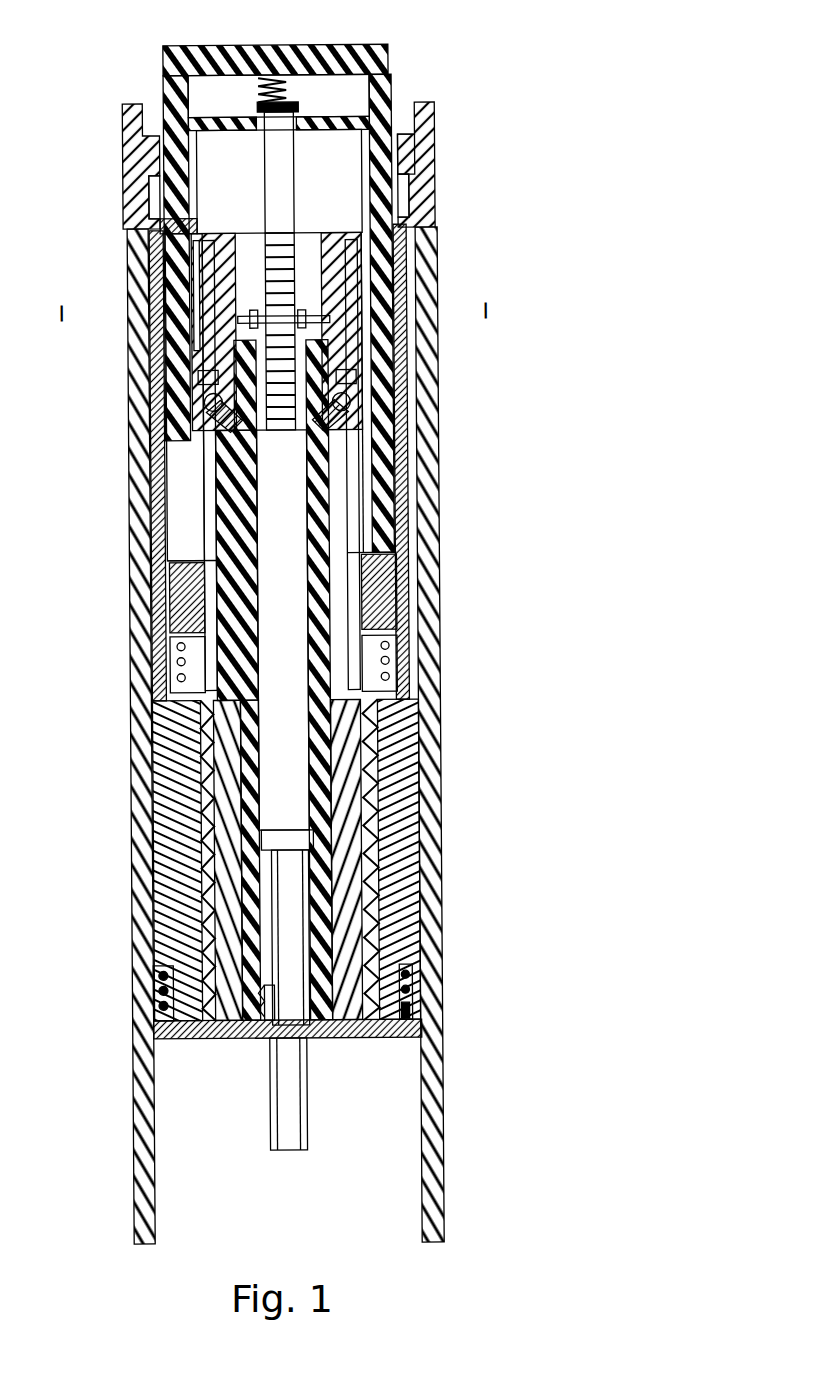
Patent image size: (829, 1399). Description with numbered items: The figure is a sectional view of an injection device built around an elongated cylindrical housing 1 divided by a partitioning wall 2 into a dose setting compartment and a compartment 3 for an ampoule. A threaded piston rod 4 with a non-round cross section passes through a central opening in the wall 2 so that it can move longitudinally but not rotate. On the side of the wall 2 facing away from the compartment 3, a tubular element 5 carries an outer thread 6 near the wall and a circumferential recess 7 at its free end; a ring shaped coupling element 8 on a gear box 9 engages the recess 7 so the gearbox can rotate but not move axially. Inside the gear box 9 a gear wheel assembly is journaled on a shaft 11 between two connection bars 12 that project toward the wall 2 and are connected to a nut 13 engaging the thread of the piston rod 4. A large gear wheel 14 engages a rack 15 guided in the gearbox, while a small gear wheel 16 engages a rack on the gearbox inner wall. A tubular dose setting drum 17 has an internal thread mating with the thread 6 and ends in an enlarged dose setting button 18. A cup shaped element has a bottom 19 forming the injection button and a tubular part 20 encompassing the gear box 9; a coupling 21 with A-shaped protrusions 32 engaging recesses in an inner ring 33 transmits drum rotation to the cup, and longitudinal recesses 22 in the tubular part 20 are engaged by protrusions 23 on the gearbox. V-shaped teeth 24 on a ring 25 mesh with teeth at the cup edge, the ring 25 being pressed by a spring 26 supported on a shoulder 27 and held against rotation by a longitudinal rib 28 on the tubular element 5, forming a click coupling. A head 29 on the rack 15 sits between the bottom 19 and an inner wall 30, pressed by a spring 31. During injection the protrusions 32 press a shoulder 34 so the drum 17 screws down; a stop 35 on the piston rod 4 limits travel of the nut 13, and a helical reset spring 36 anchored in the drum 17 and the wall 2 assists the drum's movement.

The housing 1 is at (137, 890).
The partitioning wall 2 is at (200, 1036).
The compartment 3 is at (190, 1160).
The piston rod 4 is at (283, 951).
The tubular element 5 is at (220, 494).
The outer thread 6 is at (202, 810).
The circumferential recess 7 is at (213, 398).
The coupling element 8 is at (236, 428).
The gear box 9 is at (208, 312).
The shaft 11 is at (324, 320).
The connection bars 12 is at (318, 480).
The nut 13 is at (260, 1000).
The gear wheel 14 is at (162, 245).
The rack 15 is at (200, 362).
The gear wheel 16 is at (266, 306).
The dose setting drum 17 is at (195, 553).
The dose setting button 18 is at (128, 127).
The bottom 19 is at (300, 57).
The tubular part 20 is at (178, 453).
The coupling 21 is at (403, 125).
The longitudinal recesses 22 is at (368, 360).
The protrusions 23 is at (402, 253).
The V-shaped teeth 24 is at (385, 560).
The ring 25 is at (172, 608).
The spring 26 is at (175, 660).
The shoulder 27 is at (386, 684).
The longitudinal rib 28 is at (207, 523).
The head 29 is at (303, 106).
The inner wall 30 is at (238, 120).
The spring 31 is at (266, 95).
The A-shaped protrusions 32 is at (408, 178).
The inner ring 33 is at (408, 148).
The shoulder 34 is at (150, 212).
The stop 35 is at (294, 845).
The reset spring 36 is at (408, 998).